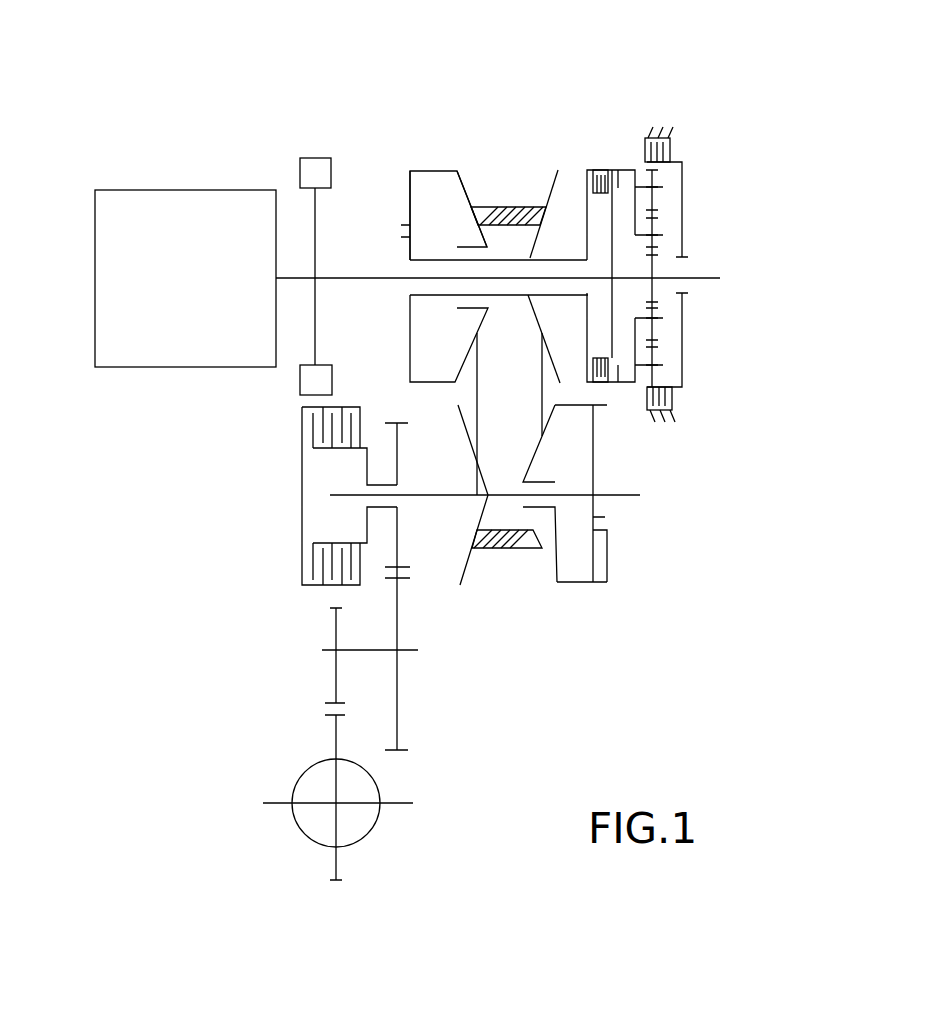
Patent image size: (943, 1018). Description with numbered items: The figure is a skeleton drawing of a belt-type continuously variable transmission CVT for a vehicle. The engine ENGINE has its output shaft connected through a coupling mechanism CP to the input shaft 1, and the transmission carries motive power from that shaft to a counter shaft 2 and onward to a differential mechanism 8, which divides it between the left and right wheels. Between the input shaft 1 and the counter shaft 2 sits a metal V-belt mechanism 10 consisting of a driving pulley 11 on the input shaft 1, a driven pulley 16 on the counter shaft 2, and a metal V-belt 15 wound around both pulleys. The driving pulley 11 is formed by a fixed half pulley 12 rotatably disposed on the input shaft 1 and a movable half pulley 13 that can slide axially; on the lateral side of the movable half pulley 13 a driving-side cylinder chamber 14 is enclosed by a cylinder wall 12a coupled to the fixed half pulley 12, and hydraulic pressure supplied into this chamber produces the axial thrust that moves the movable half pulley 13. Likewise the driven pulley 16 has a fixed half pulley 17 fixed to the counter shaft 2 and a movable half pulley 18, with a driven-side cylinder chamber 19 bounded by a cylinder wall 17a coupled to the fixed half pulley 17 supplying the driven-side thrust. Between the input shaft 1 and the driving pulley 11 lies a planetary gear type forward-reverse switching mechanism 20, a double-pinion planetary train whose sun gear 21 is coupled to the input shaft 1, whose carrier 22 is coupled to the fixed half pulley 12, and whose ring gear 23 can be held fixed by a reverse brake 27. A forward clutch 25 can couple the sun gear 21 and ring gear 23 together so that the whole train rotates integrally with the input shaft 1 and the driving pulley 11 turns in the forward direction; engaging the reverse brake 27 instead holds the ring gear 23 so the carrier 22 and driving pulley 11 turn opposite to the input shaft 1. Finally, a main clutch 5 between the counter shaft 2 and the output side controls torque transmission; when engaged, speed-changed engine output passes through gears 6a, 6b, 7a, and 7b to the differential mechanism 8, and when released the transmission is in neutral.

The input shaft 1 is at (357, 282).
The counter shaft 2 is at (430, 497).
The main clutch 5 is at (288, 556).
The gear 6a is at (405, 445).
The gear 6b is at (405, 752).
The gear 7a is at (330, 627).
The gear 7b is at (330, 733).
The differential mechanism 8 is at (375, 830).
The metal V-belt mechanism 10 is at (487, 107).
The driving pulley 11 is at (438, 157).
The fixed half pulley 12 is at (557, 168).
The cylinder wall 12a is at (405, 239).
The movable half pulley 13 is at (467, 189).
The driving-side cylinder chamber 14 is at (491, 220).
The metal V-belt 15 is at (470, 386).
The driven pulley 16 is at (550, 612).
The fixed half pulley 17 is at (468, 565).
The cylinder wall 17a is at (598, 462).
The movable half pulley 18 is at (540, 572).
The driven-side cylinder chamber 19 is at (565, 493).
The planetary gear type forward-reverse switching mechanism 20 is at (698, 121).
The sun gear 21 is at (660, 270).
The carrier 22 is at (656, 194).
The ring gear 23 is at (686, 170).
The forward clutch 25 is at (600, 180).
The reverse brake 27 is at (672, 150).
The coupling mechanism CP is at (315, 158).
The belt-type continuously variable transmission CVT is at (537, 55).
The engine ENGINE is at (185, 278).